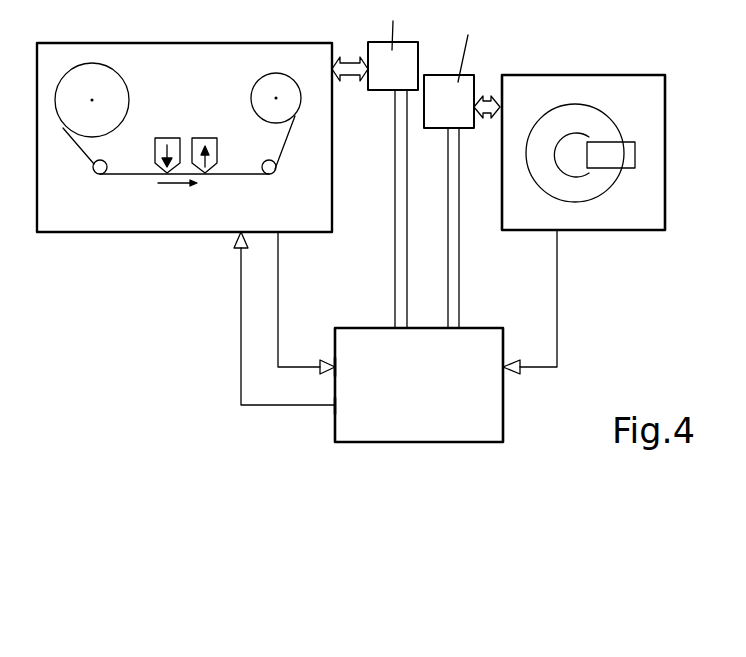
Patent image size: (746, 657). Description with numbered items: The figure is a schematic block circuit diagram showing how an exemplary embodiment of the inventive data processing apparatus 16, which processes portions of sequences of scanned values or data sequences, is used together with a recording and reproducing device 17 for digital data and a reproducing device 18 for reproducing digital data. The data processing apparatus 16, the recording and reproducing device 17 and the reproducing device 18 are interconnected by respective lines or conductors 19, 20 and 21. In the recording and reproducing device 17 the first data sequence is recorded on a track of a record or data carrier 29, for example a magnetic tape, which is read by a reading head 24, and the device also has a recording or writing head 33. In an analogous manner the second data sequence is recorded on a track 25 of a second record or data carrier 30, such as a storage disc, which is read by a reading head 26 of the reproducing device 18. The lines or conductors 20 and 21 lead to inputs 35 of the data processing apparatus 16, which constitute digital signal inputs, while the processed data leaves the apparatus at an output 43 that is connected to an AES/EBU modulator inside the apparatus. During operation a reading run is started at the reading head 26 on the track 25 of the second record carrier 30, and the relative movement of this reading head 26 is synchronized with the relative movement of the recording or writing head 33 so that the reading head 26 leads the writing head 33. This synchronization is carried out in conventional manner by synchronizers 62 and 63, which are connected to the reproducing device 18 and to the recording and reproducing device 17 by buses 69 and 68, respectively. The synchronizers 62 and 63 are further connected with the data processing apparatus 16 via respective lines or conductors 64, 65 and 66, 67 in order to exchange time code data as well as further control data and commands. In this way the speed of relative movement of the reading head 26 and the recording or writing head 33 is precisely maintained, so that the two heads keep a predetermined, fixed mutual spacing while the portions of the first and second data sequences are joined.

The data processing apparatus 16 is at (505, 432).
The recording and reproducing device 17 is at (60, 233).
The reproducing device 18 is at (648, 232).
The line or conductor 19 is at (241, 357).
The line or conductor 20 is at (278, 282).
The line or conductor 21 is at (557, 318).
The reading head 24 is at (207, 138).
The track 25 is at (553, 168).
The reading head 26 is at (603, 160).
The record or data carrier 29 is at (120, 175).
The second record or data carrier 30 is at (552, 110).
The recording or writing head 33 is at (168, 138).
The input 35 is at (333, 362).
The output 43 is at (333, 408).
The synchronizer 62 is at (470, 78).
The synchronizer 63 is at (419, 44).
The line or conductor 64 is at (459, 282).
The line or conductor 65 is at (448, 282).
The line or conductor 66 is at (407, 183).
The line or conductor 67 is at (395, 183).
The bus 68 is at (352, 82).
The bus 69 is at (484, 120).